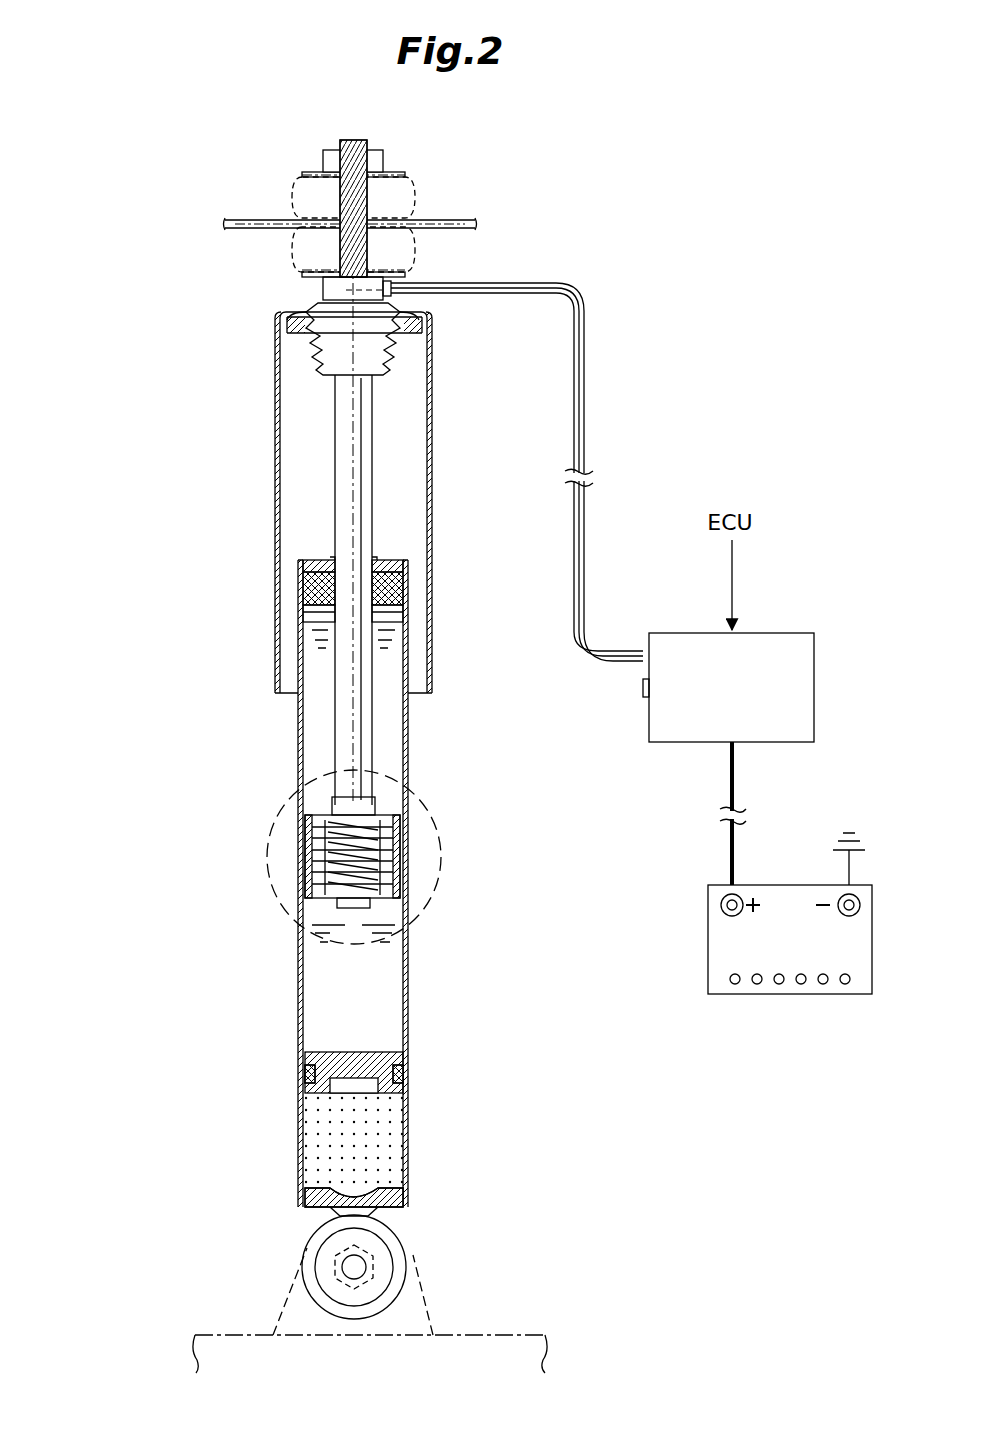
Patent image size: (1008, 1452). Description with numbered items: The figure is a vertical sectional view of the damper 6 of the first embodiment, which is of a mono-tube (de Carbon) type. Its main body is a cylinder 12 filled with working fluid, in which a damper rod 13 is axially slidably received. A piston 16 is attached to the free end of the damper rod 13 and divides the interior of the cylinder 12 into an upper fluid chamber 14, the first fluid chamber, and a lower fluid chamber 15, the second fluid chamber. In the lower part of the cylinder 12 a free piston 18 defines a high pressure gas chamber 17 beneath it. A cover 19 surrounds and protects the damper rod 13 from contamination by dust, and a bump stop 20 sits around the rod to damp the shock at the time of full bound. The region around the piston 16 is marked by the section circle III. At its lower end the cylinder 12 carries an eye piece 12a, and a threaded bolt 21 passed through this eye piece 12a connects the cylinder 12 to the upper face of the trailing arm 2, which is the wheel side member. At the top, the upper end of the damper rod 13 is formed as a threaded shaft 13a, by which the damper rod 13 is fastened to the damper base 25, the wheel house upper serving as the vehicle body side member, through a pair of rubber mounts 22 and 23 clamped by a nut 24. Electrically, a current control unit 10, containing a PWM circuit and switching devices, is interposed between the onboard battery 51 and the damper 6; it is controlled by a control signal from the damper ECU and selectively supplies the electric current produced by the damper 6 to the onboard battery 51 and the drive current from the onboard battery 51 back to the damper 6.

The trailing arm 2 is at (470, 1340).
The damper 6 is at (135, 420).
The current control unit 10 is at (779, 634).
The cylinder 12 is at (300, 945).
The eye piece 12a is at (305, 1252).
The damper rod 13 is at (340, 725).
The threaded shaft 13a is at (343, 147).
The upper fluid chamber 14 is at (390, 733).
The lower fluid chamber 15 is at (390, 970).
The piston 16 is at (328, 812).
The high pressure gas chamber 17 is at (385, 1140).
The free piston 18 is at (305, 1063).
The cover 19 is at (277, 500).
The bump stop 20 is at (320, 360).
The threaded bolt 21 is at (345, 1267).
The rubber mount 22 is at (410, 190).
The rubber mount 23 is at (410, 253).
The nut 24 is at (386, 160).
The damper base 25 is at (253, 222).
The onboard battery 51 is at (786, 893).
The detail section III is at (440, 852).